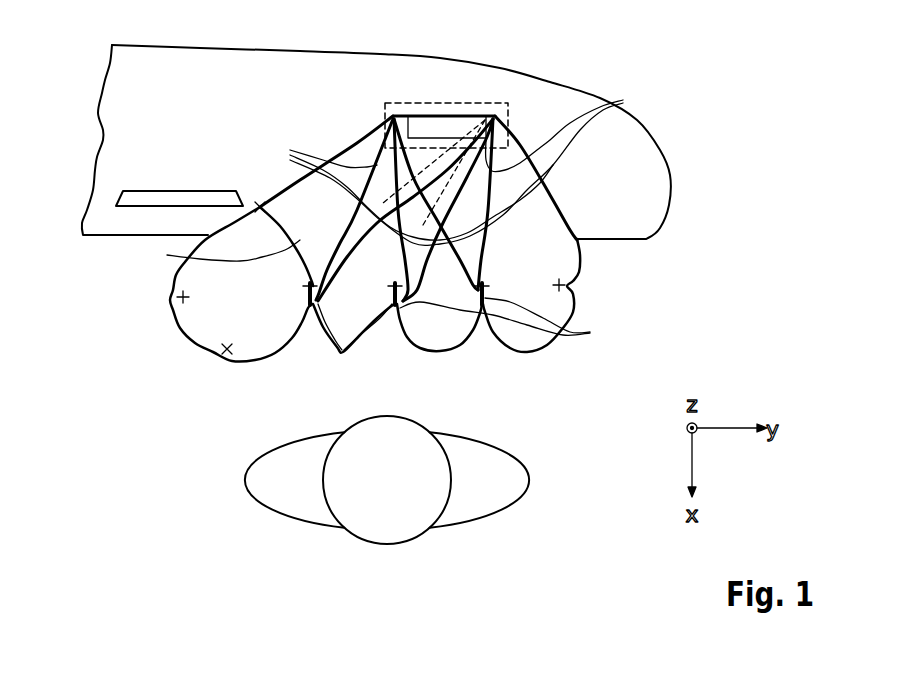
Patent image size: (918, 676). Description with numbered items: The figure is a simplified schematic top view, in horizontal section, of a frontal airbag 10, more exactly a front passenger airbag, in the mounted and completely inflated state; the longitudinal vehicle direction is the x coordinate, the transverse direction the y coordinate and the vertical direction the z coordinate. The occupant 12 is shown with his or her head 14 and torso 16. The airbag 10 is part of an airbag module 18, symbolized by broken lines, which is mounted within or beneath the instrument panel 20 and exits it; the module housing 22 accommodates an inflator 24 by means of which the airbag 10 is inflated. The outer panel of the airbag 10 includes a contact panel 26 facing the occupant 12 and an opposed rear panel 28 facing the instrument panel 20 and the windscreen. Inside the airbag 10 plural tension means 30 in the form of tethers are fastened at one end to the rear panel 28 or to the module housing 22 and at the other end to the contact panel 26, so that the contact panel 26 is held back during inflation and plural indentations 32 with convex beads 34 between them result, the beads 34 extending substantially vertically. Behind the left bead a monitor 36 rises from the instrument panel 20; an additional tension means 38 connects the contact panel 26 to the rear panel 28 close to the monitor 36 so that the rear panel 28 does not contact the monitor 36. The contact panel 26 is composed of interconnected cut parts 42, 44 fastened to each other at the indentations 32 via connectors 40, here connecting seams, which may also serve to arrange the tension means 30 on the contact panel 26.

The frontal airbag 10 is at (566, 196).
The occupant 12 is at (391, 512).
The head 14 is at (387, 533).
The torso 16 is at (293, 503).
The airbag module 18 is at (500, 97).
The instrument panel 20 is at (571, 87).
The module housing 22 is at (405, 103).
The inflator 24 is at (450, 113).
The contact panel 26 is at (248, 376).
The rear panel 28 is at (350, 137).
The tension means 30 is at (456, 164).
The indentations 32 is at (306, 304).
The convex beads 34 is at (287, 347).
The monitor 36 is at (170, 191).
The additional tension means 38 is at (218, 256).
The connectors 40 is at (223, 352).
The cut part 42 is at (263, 364).
The cut part 44 is at (173, 320).